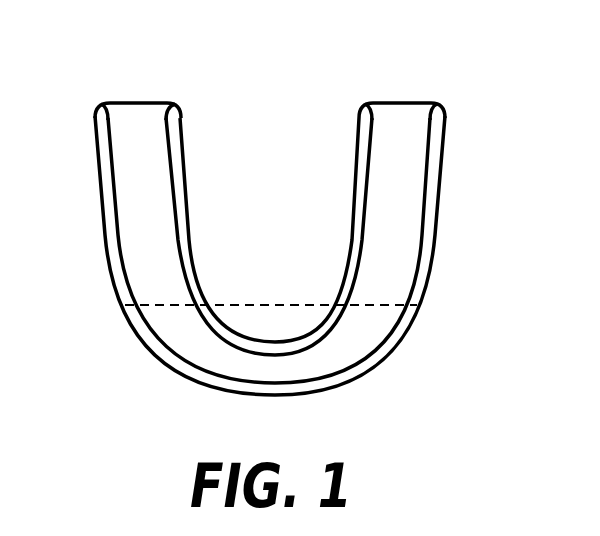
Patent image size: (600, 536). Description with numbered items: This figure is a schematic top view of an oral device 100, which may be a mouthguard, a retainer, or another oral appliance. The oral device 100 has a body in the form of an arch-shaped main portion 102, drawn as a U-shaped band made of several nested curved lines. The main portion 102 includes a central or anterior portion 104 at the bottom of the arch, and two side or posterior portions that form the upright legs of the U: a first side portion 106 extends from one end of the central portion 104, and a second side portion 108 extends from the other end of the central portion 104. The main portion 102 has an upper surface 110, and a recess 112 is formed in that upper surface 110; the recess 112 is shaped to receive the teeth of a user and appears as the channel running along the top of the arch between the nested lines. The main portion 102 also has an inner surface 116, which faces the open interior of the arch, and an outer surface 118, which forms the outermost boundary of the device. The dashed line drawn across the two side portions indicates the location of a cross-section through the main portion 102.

The oral device 100 is at (73, 82).
The main portion 102 is at (140, 343).
The central portion 104 is at (270, 340).
The first side portion 106 is at (184, 140).
The second side portion 108 is at (445, 153).
The upper surface 110 is at (433, 217).
The recess 112 is at (398, 115).
The inner surface 116 is at (190, 233).
The outer surface 118 is at (100, 211).